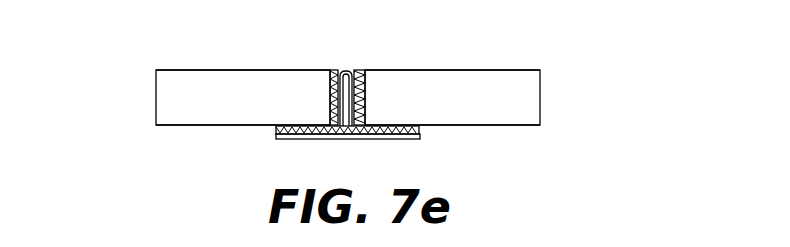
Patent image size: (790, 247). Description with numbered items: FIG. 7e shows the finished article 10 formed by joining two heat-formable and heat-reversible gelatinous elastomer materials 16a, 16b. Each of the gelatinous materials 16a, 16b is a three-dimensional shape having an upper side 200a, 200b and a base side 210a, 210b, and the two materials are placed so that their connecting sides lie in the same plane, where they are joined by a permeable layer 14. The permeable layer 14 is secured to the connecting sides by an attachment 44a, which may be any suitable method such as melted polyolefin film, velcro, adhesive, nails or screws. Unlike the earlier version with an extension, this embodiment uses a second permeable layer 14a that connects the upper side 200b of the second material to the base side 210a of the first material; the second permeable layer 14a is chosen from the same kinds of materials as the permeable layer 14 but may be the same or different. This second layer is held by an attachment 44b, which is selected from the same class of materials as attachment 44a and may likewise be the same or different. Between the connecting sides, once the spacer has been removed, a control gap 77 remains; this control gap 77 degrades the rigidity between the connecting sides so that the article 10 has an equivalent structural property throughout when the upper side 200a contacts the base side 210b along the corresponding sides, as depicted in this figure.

The article 10 is at (588, 45).
The permeable layer 14 is at (347, 70).
The second permeable layer 14a is at (420, 134).
The first gelatinous elastomer material 16a is at (156, 99).
The second gelatinous elastomer material 16b is at (540, 97).
The attachment 44a is at (383, 50).
The attachment 44b is at (277, 130).
The control gap 77 is at (346, 112).
The upper side of first material 200a is at (229, 70).
The upper side of second material 200b is at (521, 125).
The base side of first material 210a is at (166, 125).
The base side of second material 210b is at (474, 70).